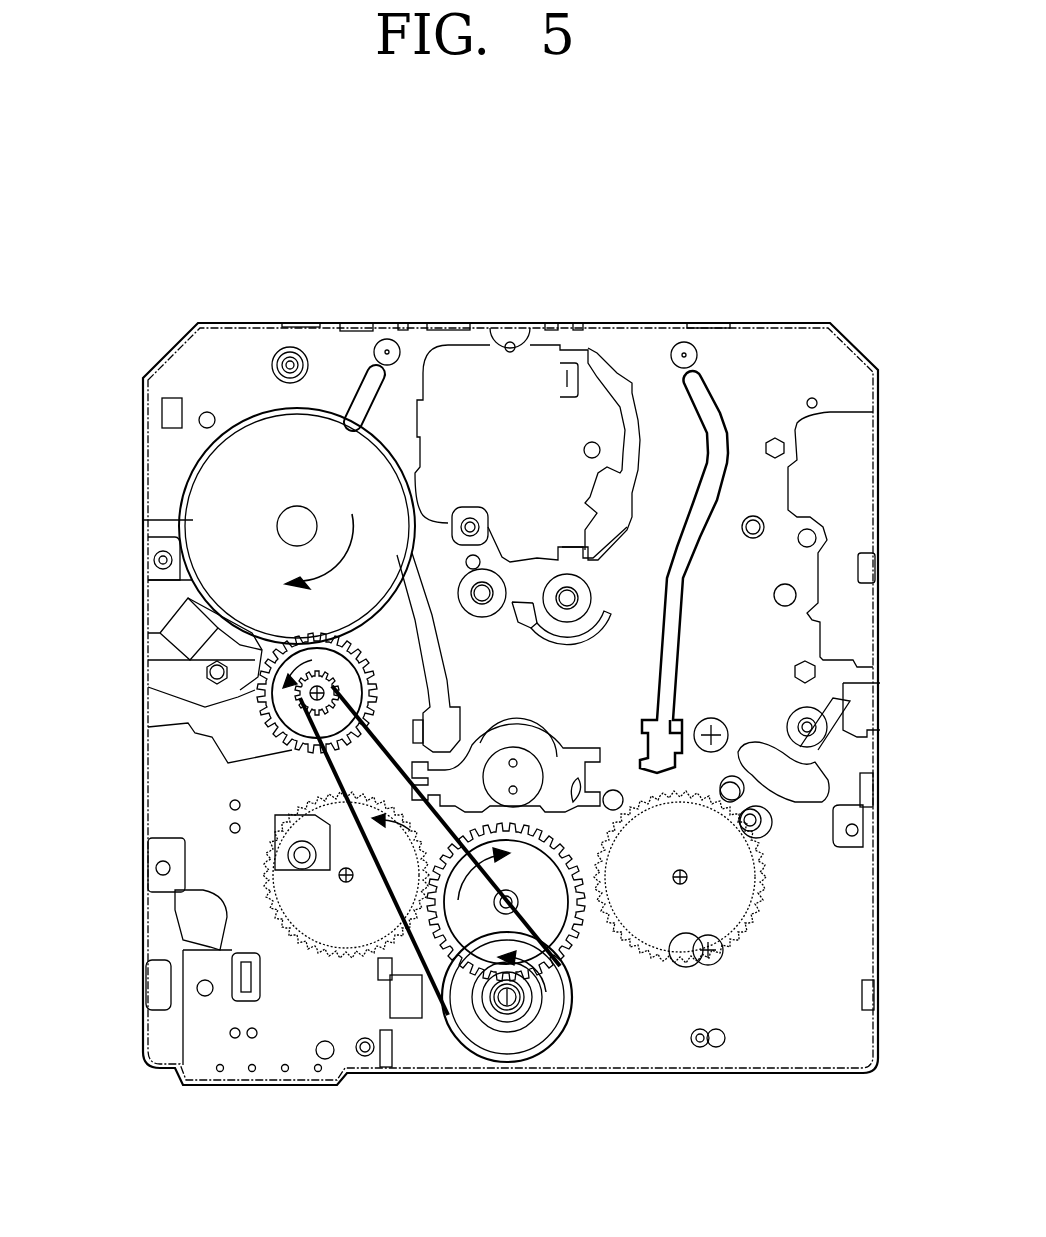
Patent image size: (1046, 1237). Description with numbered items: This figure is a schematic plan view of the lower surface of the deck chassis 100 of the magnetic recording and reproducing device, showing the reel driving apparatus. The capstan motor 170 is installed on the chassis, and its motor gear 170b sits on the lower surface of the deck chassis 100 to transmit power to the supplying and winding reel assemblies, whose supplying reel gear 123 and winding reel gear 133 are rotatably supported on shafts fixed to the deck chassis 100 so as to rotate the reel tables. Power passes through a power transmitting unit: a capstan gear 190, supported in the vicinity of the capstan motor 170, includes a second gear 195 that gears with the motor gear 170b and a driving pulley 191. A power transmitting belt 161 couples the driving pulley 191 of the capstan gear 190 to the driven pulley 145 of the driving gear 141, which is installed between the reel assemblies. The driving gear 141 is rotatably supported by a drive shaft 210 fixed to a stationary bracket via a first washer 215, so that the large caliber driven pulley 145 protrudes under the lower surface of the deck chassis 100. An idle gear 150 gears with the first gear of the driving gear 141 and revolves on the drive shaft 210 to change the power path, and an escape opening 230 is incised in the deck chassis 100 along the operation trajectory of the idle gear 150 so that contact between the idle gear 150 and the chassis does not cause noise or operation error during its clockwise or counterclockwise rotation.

The deck chassis 100 is at (707, 1048).
The supplying reel gear 123 is at (765, 890).
The winding reel gear 133 is at (262, 897).
The driving gear 141 is at (557, 1047).
The driven pulley 145 is at (535, 1045).
The idle gear 150 is at (403, 977).
The power transmitting belt 161 is at (290, 752).
The capstan motor 170 is at (190, 468).
The motor gear 170b is at (310, 430).
The capstan gear 190 is at (260, 672).
The driving pulley 191 is at (305, 695).
The second gear 195 is at (270, 645).
The drive shaft 210 is at (500, 1012).
The first washer 215 is at (493, 1010).
The escape opening 230 is at (570, 778).